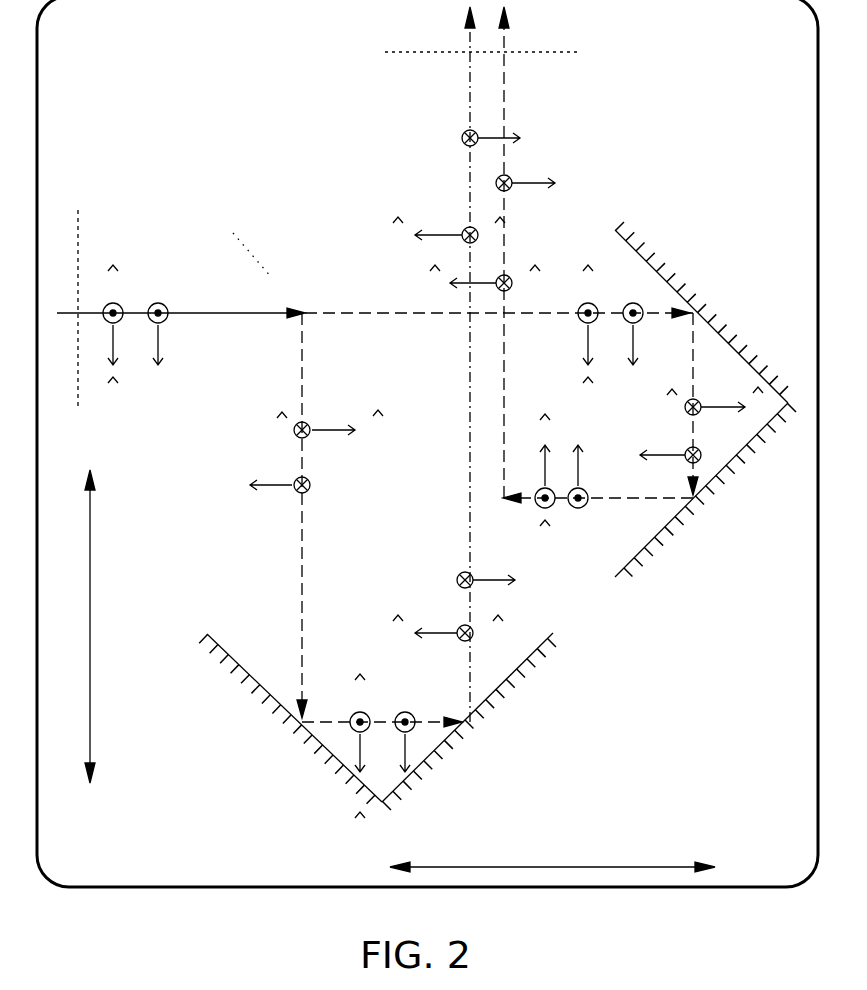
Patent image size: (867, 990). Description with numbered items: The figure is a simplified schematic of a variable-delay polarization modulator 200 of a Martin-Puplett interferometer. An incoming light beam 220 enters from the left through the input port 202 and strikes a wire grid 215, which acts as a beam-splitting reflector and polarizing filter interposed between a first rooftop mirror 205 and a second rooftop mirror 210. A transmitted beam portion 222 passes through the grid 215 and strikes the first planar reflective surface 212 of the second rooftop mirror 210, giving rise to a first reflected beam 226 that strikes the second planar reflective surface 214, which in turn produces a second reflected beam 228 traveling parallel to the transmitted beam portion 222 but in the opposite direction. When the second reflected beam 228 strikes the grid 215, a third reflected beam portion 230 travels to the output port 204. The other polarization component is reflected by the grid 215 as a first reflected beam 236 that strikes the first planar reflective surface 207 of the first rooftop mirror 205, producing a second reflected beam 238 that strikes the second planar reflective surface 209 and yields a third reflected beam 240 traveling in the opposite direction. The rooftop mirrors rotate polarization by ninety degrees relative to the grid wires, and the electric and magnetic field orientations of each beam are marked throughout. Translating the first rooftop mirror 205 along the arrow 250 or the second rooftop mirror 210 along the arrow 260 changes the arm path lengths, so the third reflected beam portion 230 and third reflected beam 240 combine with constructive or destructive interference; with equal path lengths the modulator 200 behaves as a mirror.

The variable-delay polarization modulator 200 is at (222, 70).
The input port 202 is at (80, 230).
The output port 204 is at (547, 52).
The first rooftop mirror 205 is at (388, 719).
The first planar reflective surface 207 is at (215, 646).
The second planar reflective surface 209 is at (547, 645).
The second rooftop mirror 210 is at (710, 421).
The first planar reflective surface 212 is at (628, 240).
The second planar reflective surface 214 is at (627, 565).
The wire grid 215 is at (237, 242).
The incoming light beam 220 is at (195, 313).
The transmitted beam portion 222 is at (378, 311).
The first reflected beam 226 is at (703, 330).
The second reflected beam 228 is at (667, 498).
The third reflected beam portion 230 is at (507, 116).
The first reflected beam 236 is at (302, 528).
The second reflected beam 238 is at (428, 723).
The third reflected beam 240 is at (468, 114).
The arrow 250 is at (92, 528).
The arrow 260 is at (600, 870).